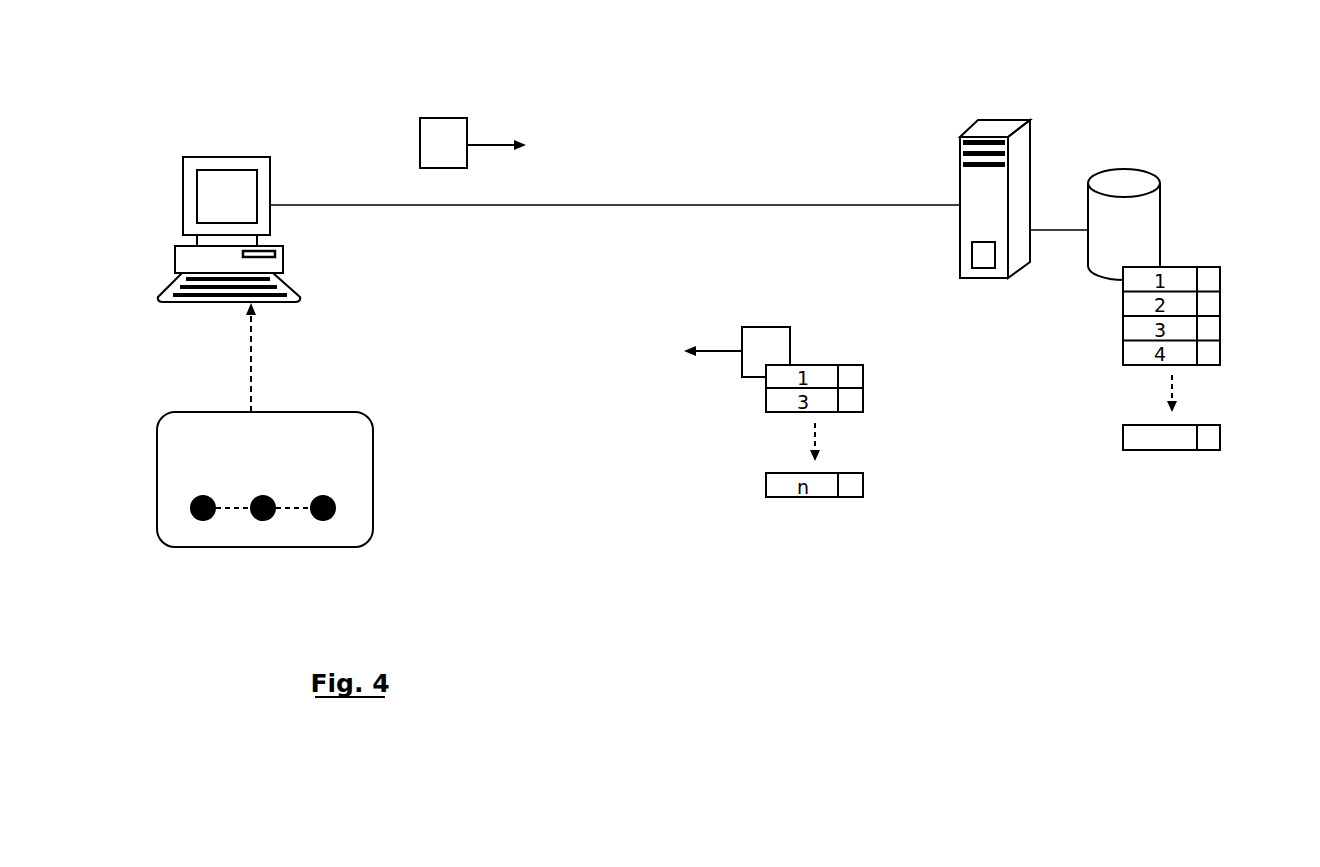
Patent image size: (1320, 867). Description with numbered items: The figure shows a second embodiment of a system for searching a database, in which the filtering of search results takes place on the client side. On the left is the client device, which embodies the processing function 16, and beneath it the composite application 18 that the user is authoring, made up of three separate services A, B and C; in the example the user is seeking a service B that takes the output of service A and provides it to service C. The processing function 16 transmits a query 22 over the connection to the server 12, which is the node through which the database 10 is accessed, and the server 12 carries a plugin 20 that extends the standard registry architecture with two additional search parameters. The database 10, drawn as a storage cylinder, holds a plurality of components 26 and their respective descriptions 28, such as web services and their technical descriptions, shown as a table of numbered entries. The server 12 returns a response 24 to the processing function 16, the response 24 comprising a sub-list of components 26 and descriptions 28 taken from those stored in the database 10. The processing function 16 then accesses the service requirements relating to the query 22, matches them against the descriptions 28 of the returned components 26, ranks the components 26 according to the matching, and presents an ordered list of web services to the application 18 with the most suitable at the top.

The database 10 is at (1122, 170).
The server 12 is at (995, 120).
The processing function 16 is at (250, 157).
The composite application 18 is at (192, 547).
The plugin 20 is at (983, 268).
The query 22 is at (442, 118).
The response 24 is at (767, 327).
The components 26 is at (1160, 450).
The descriptions 28 is at (1205, 450).